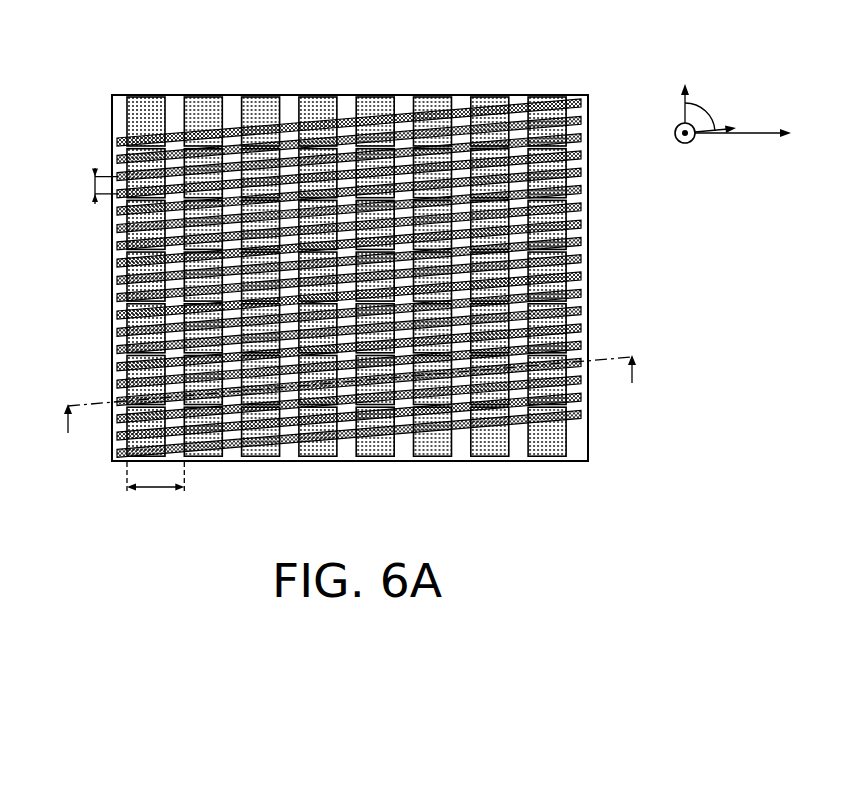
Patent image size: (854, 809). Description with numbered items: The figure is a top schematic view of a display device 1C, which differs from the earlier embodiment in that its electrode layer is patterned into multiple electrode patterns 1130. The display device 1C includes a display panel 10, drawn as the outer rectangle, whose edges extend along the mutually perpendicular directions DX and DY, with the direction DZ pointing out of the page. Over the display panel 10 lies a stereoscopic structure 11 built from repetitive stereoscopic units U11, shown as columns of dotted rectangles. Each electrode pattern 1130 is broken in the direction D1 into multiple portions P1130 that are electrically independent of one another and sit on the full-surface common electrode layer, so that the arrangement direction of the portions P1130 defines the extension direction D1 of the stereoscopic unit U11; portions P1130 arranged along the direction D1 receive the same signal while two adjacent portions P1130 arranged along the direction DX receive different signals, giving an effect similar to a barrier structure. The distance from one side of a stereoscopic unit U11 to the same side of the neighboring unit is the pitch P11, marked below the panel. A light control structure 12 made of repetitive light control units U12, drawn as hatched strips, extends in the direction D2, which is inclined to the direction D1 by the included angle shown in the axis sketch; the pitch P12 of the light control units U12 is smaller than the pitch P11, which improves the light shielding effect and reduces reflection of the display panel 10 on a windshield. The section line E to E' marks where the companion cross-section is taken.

The display panel 10 is at (118, 95).
The stereoscopic structure 11 is at (346, 233).
The electrode pattern 1130 is at (346, 233).
The stereoscopic unit U11 is at (147, 108).
The portion P1130 is at (346, 276).
The light control structure 12 is at (310, 278).
The light control unit U12 is at (117, 143).
The pitch of the light control units P12 is at (82, 187).
The pitch of the stereoscopic units P11 is at (155, 495).
The display device 1C is at (670, 520).
The section line E is at (346, 409).
The section line E' is at (637, 384).
The direction D1 is at (684, 89).
The direction DY is at (684, 89).
The direction D2 is at (732, 118).
The direction DX is at (757, 137).
The direction DZ is at (686, 152).